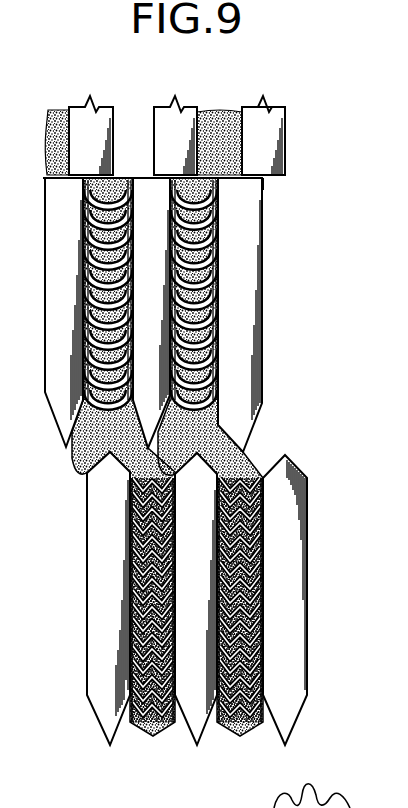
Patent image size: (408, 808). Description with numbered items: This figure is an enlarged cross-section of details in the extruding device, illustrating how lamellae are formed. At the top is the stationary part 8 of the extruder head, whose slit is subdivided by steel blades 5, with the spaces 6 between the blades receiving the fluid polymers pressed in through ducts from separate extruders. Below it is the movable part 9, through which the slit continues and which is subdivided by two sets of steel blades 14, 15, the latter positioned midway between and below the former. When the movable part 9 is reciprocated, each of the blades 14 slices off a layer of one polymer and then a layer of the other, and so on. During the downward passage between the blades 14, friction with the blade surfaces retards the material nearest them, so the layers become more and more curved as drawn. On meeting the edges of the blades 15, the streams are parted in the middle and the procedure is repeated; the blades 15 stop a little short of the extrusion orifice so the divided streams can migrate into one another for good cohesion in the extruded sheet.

The steel blades 5 is at (261, 148).
The spaces between the blades 6 is at (130, 120).
The stationary part 8 is at (285, 143).
The movable part 9 is at (265, 210).
The steel blades 14 is at (248, 263).
The steel blades 15 is at (293, 585).